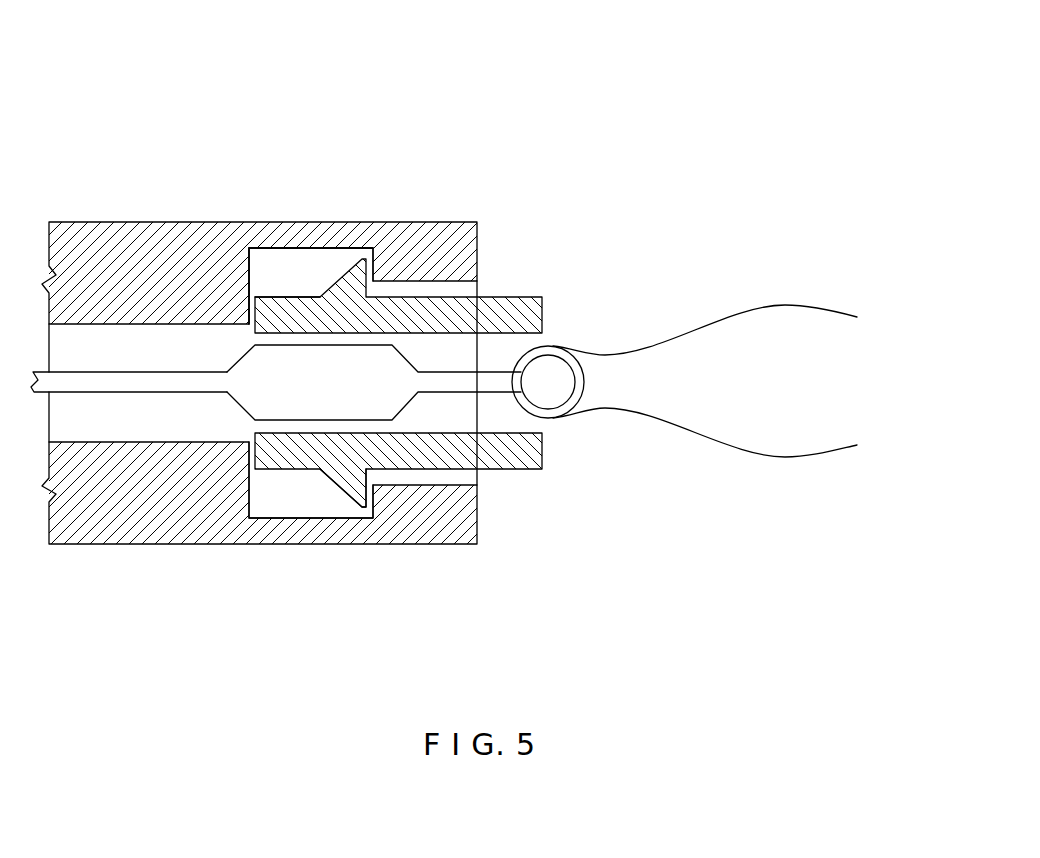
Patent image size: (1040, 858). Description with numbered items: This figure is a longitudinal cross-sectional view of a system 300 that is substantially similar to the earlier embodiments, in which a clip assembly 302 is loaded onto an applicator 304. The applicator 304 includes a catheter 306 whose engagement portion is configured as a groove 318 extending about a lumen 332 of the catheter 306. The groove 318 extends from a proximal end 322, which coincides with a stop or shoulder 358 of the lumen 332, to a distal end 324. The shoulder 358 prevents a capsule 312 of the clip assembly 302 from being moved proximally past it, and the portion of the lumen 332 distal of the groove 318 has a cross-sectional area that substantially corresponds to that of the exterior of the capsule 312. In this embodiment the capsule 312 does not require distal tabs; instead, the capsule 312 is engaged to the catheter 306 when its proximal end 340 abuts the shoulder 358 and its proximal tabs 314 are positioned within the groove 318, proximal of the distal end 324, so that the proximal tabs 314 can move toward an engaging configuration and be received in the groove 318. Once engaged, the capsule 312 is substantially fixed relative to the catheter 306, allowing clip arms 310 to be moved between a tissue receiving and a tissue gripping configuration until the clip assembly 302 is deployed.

The system 300 is at (467, 155).
The clip assembly 302 is at (587, 313).
The applicator 304 is at (187, 188).
The catheter 306 is at (268, 222).
The clip arms 310 is at (785, 307).
The capsule 312 is at (460, 448).
The proximal tabs 314 is at (350, 478).
The groove 318 is at (308, 267).
The proximal end of the groove 322 is at (249, 288).
The distal end of the groove 324 is at (372, 257).
The lumen 332 is at (117, 347).
The proximal end of the capsule 340 is at (279, 468).
The shoulder 358 is at (247, 492).